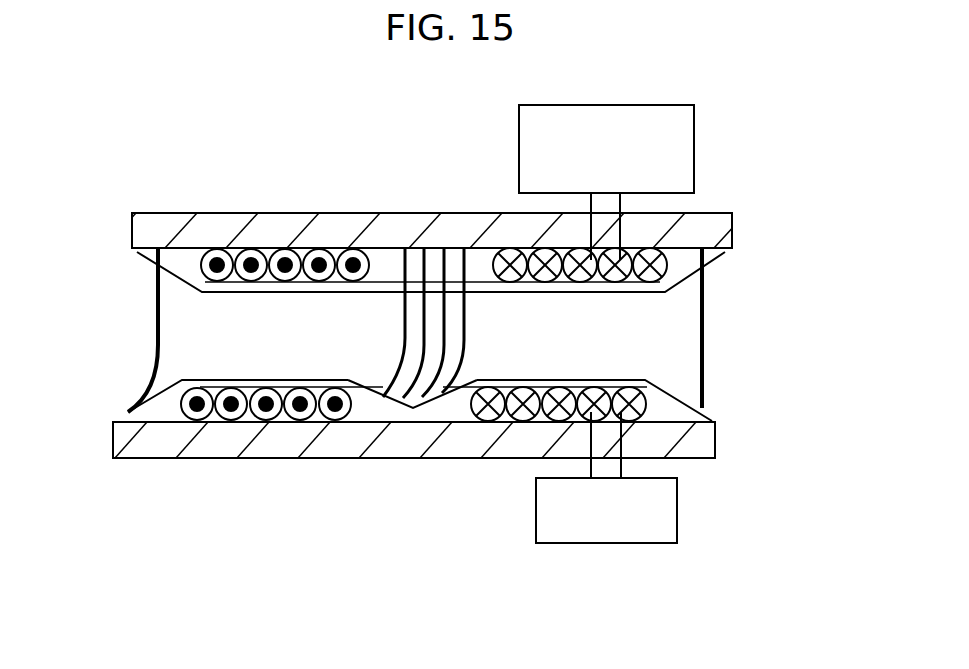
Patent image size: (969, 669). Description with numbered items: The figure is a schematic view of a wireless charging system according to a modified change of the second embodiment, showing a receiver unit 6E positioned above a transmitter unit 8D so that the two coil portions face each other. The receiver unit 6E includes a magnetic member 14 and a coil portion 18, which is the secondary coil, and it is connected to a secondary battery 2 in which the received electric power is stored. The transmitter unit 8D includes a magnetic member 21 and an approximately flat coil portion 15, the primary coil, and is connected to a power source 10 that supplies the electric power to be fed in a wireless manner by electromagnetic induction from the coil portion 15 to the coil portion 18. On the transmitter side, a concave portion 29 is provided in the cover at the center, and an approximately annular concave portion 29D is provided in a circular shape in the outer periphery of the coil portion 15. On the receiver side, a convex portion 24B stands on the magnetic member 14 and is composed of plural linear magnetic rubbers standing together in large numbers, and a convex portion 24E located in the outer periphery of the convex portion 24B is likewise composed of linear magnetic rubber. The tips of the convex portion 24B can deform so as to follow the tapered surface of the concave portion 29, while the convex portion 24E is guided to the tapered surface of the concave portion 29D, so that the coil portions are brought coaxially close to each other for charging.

The secondary battery 2 is at (608, 105).
The receiver unit 6E is at (752, 186).
The transmitter unit 8D is at (724, 507).
The power source 10 is at (609, 545).
The magnetic member 14 is at (222, 220).
The coil portion 15 is at (197, 402).
The coil portion 18 is at (216, 270).
The magnetic member 21 is at (288, 458).
The convex portion 24B is at (547, 330).
The convex portion 24E is at (157, 314).
The concave portion 29 is at (377, 388).
The concave portion 29D is at (128, 412).